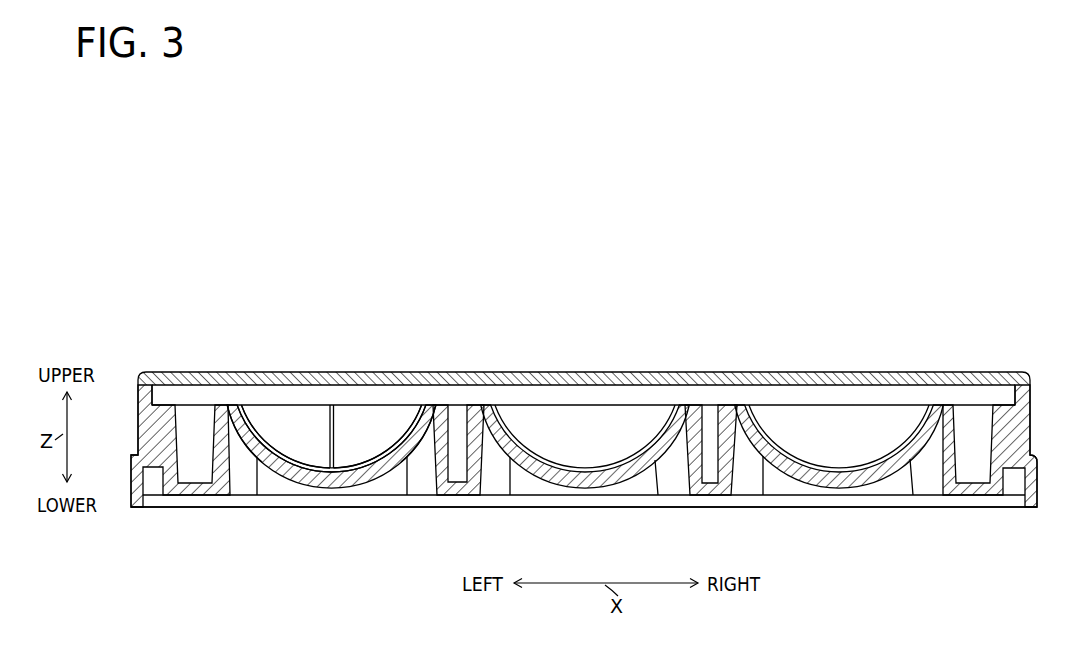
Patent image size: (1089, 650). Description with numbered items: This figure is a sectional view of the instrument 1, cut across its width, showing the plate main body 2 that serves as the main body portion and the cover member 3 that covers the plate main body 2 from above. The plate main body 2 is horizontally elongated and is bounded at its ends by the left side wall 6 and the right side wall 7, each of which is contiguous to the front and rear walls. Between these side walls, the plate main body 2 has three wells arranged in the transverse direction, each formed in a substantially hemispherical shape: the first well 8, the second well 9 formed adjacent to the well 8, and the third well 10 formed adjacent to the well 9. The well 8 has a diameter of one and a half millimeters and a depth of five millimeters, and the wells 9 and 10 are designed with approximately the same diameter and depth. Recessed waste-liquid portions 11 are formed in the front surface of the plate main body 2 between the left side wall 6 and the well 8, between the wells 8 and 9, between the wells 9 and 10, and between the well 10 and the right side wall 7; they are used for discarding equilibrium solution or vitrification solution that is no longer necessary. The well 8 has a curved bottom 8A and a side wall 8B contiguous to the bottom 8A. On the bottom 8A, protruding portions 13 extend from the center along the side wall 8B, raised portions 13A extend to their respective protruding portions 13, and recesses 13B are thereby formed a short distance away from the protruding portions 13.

The instrument 1 is at (783, 297).
The plate main body 2 is at (1031, 507).
The cover member 3 is at (798, 377).
The left side wall 6 is at (131, 482).
The right side wall 7 is at (1039, 483).
The well 8 is at (396, 421).
The bottom 8A is at (300, 468).
The side wall 8B is at (244, 453).
The well 9 is at (651, 420).
The well 10 is at (906, 421).
The waste-liquid portion 11 is at (458, 420).
The protruding portion 13 is at (328, 421).
The raised portion 13A is at (336, 463).
The recess 13B is at (352, 486).